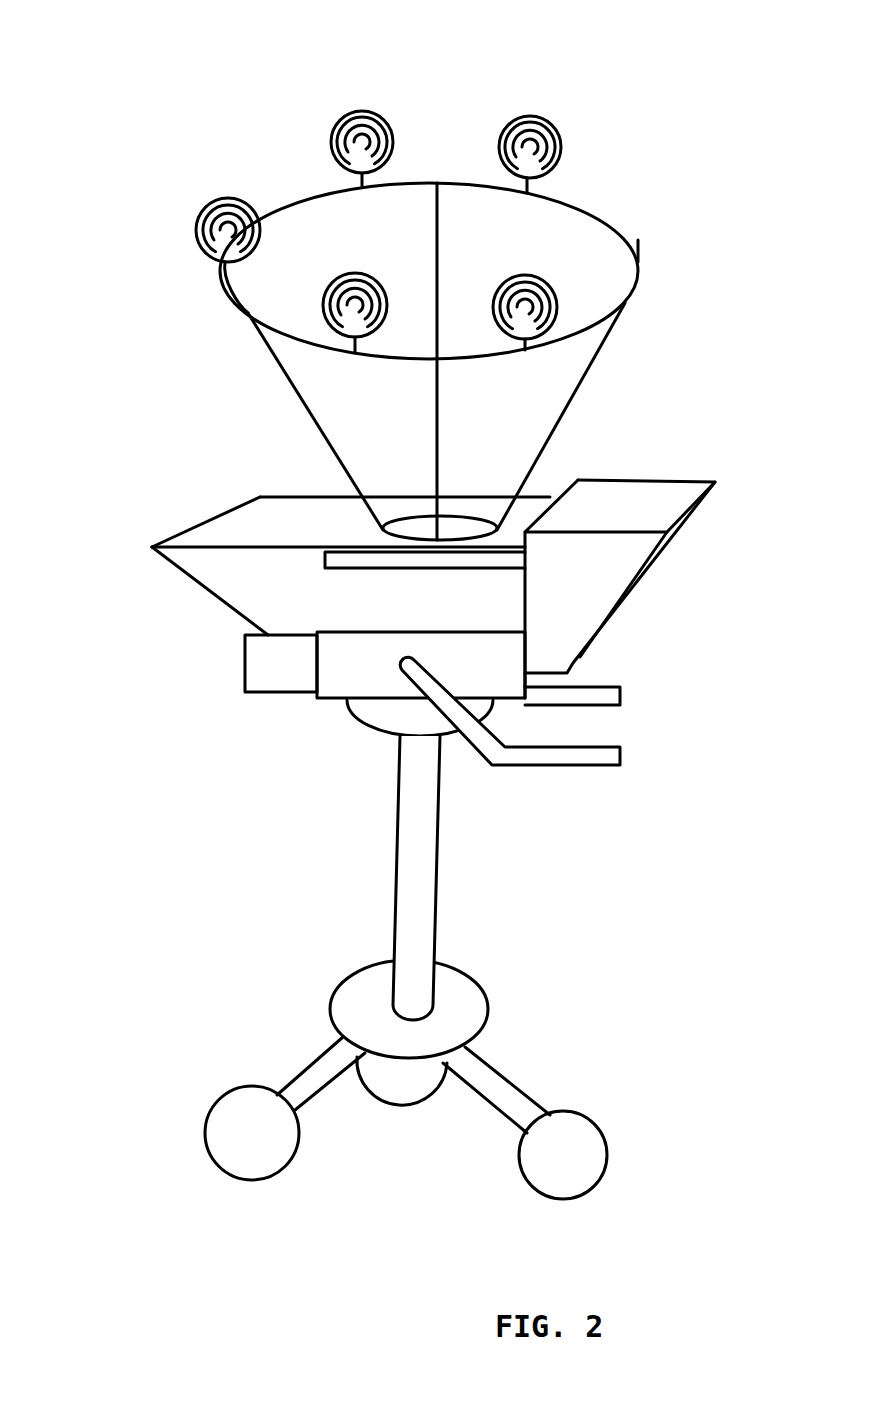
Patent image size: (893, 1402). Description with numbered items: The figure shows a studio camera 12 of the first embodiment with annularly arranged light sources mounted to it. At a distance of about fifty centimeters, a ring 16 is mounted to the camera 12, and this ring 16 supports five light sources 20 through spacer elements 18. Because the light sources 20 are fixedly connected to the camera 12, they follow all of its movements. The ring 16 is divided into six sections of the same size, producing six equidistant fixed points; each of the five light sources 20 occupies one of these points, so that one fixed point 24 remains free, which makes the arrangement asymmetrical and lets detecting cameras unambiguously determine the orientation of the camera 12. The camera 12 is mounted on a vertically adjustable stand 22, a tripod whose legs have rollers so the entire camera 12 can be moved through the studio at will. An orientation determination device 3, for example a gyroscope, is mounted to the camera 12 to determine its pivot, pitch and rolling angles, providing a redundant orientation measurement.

The orientation determination device 3 is at (267, 695).
The studio camera 12 is at (248, 583).
The ring 16 is at (585, 208).
The spacer elements 18 is at (343, 180).
The light sources 20 is at (530, 145).
The stand 22 is at (412, 885).
The free fixed point 24 is at (638, 257).